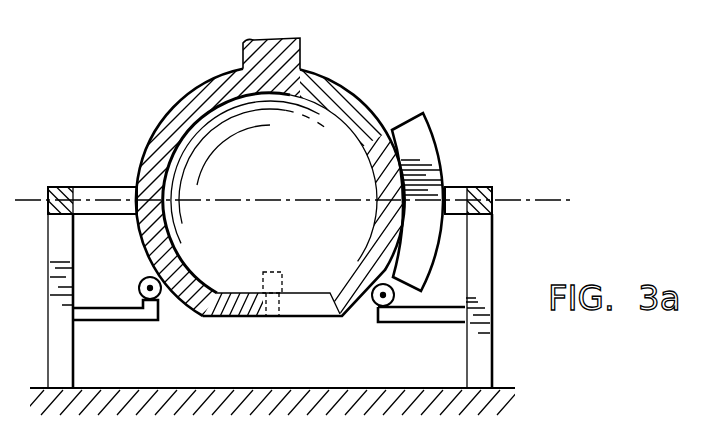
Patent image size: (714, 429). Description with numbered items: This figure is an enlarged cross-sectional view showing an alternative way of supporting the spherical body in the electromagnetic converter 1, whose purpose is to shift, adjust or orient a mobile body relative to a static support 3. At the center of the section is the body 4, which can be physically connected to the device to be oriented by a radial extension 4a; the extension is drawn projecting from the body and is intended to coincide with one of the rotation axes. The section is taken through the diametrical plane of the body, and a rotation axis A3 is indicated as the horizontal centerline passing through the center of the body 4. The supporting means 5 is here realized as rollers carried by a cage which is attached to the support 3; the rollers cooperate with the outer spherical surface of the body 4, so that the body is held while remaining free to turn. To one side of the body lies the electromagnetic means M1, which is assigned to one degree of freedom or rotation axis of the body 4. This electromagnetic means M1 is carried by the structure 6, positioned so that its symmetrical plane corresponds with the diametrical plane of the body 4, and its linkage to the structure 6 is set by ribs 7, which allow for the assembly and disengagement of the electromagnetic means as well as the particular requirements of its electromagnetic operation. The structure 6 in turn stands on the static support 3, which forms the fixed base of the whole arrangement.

The electromagnetic converter 1 is at (156, 98).
The body 4 is at (148, 150).
The radial extension 4a is at (256, 53).
The electromagnetic means M1 is at (410, 128).
The structure 6 is at (62, 187).
The ribs 7 is at (457, 196).
The rotation axis A3 is at (125, 214).
The static support 3 is at (138, 388).
The supporting means 5 is at (397, 326).